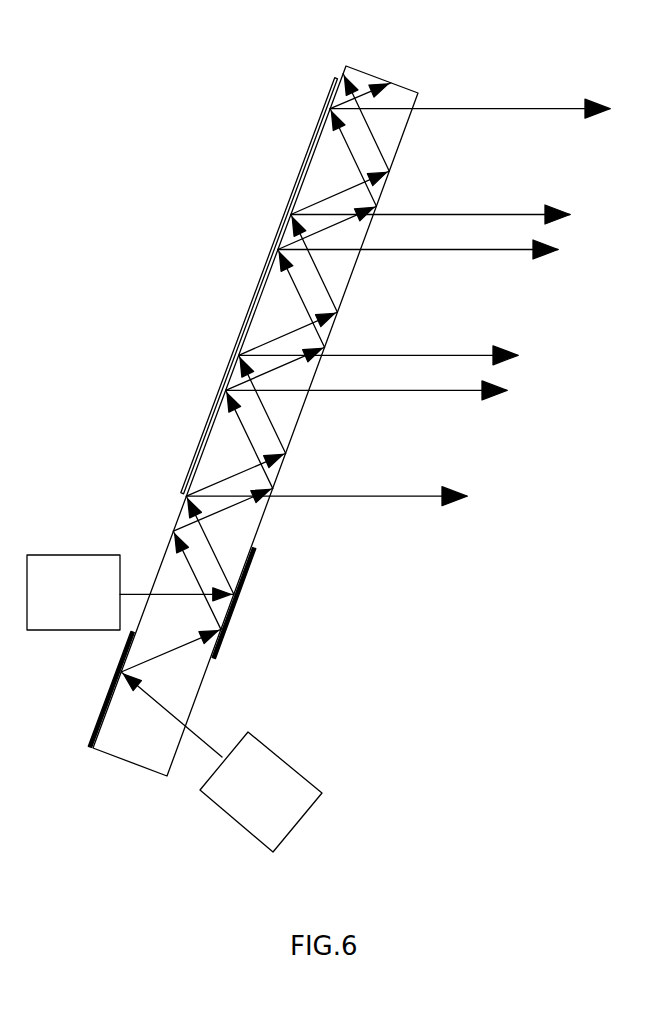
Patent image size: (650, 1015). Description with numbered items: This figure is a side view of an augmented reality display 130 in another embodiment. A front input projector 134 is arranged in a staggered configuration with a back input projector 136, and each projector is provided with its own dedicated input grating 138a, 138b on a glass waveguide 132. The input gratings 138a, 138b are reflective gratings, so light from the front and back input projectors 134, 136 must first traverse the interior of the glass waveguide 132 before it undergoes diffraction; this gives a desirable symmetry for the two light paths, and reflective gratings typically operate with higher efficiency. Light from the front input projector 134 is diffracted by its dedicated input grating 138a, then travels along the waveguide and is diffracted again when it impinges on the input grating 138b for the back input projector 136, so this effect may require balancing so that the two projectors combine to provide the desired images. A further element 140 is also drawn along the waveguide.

The augmented reality display 130 is at (183, 183).
The glass waveguide 132 is at (407, 88).
The front input projector 134 is at (288, 802).
The back input projector 136 is at (103, 608).
The input grating 138a is at (93, 749).
The input grating 138b is at (238, 598).
The mirror 140 is at (207, 438).